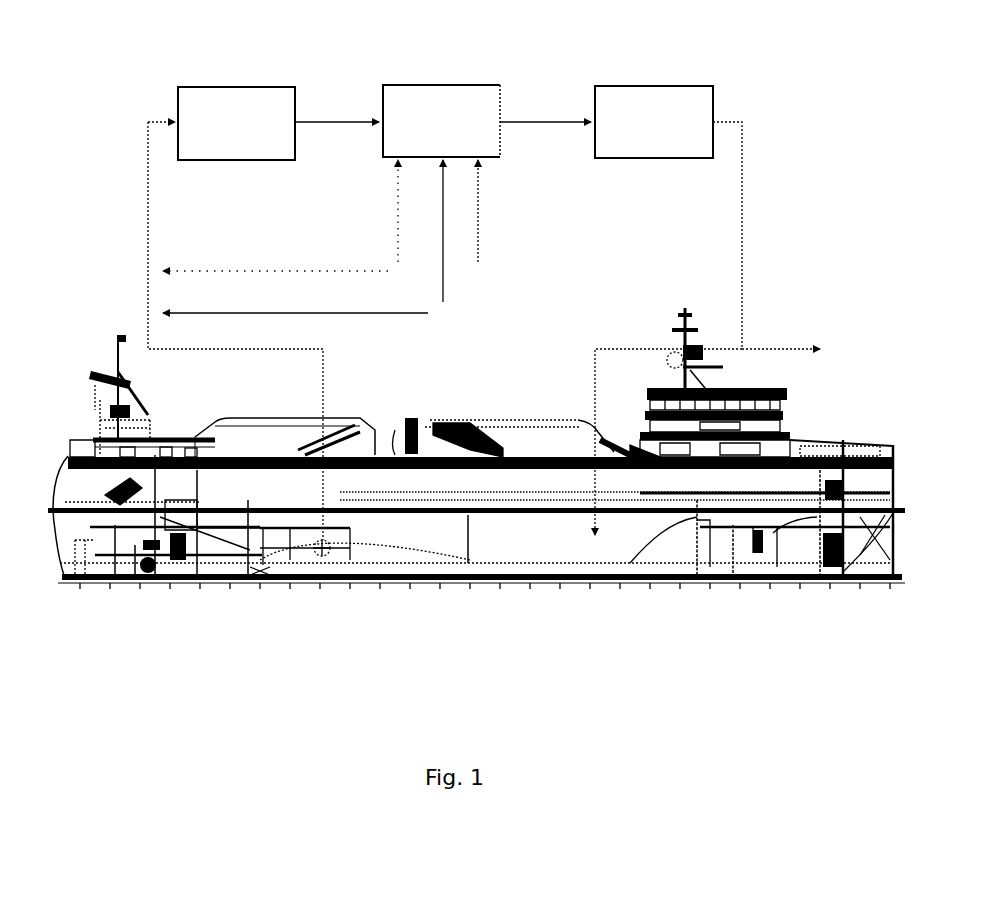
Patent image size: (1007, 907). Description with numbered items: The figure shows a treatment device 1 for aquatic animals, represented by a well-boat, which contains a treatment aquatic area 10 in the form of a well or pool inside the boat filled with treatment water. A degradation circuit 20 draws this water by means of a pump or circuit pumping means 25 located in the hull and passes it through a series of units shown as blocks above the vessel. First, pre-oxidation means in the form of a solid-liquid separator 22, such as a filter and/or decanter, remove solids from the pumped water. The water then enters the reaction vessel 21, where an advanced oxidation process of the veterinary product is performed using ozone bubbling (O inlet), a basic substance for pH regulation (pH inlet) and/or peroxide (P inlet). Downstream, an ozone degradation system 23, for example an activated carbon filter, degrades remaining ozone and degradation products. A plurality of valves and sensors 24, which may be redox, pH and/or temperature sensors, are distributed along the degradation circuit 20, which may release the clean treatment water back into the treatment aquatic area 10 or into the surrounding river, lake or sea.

The treatment device 1 is at (250, 631).
The treatment aquatic area 10 is at (492, 545).
The degradation circuit 20 is at (163, 120).
The reaction vessel 21 is at (464, 120).
The solid-liquid separator 22 is at (252, 120).
The ozone degradation system 23 is at (658, 120).
The valves and sensors 24 is at (340, 116).
The circuit pumping means 25 is at (322, 558).